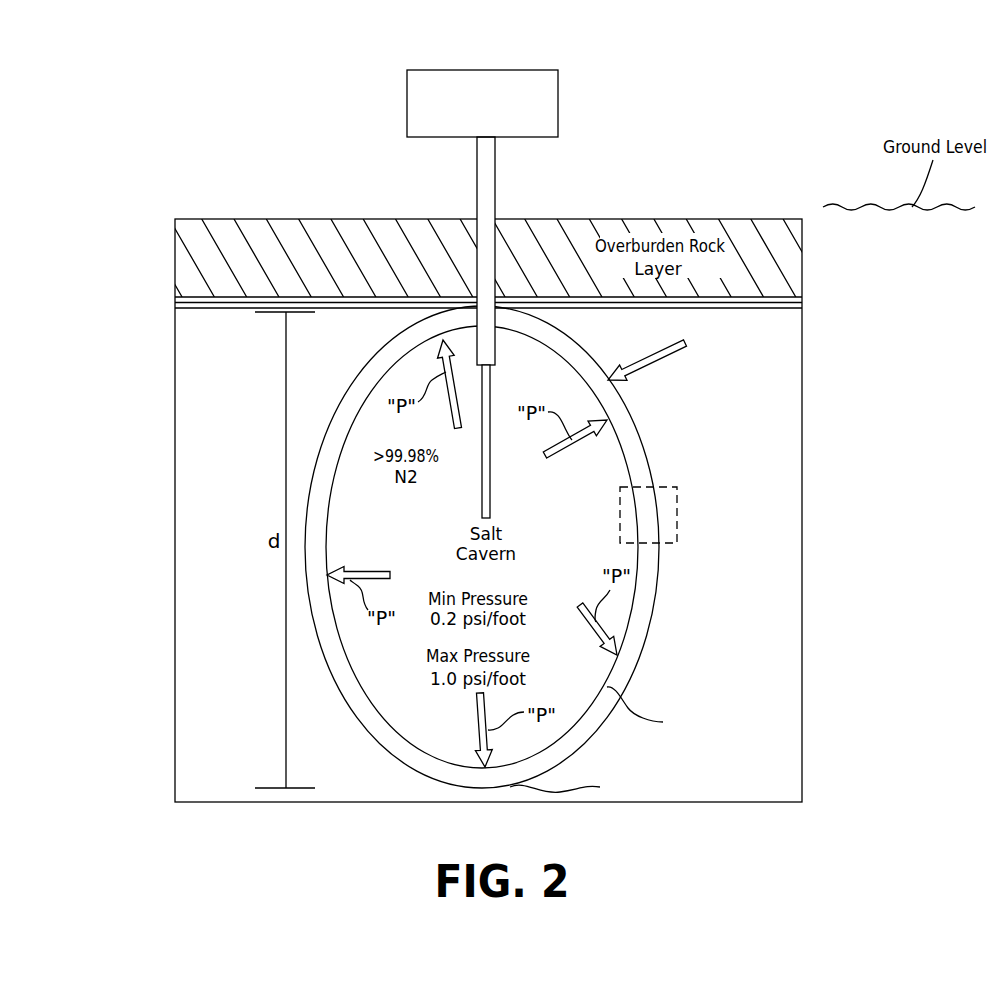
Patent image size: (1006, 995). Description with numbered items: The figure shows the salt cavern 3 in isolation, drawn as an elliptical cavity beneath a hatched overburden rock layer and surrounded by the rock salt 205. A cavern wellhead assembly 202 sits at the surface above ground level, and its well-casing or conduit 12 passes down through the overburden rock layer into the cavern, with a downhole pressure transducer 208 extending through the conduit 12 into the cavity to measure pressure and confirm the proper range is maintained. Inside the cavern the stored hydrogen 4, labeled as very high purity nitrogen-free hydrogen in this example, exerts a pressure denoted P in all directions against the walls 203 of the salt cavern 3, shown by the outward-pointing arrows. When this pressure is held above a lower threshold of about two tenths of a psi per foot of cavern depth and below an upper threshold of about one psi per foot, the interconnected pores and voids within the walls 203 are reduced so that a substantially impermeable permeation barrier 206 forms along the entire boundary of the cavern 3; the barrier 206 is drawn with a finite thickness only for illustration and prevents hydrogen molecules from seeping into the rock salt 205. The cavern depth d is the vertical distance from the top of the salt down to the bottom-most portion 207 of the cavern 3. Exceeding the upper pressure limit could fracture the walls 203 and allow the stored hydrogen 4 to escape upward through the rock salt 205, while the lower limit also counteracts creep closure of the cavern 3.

The cavern wellhead assembly 202 is at (528, 75).
The well-casing or conduit 12 is at (497, 262).
The salt cavern 3 is at (665, 462).
The downhole pressure transducer 208 is at (495, 491).
The stored hydrogen 4 is at (570, 557).
The rock salt 205 is at (775, 637).
The substantially impermeable permeation barrier 206 is at (645, 612).
The walls of the salt cavern 203 is at (655, 712).
The bottom-most portion of the salt cavern 207 is at (575, 788).